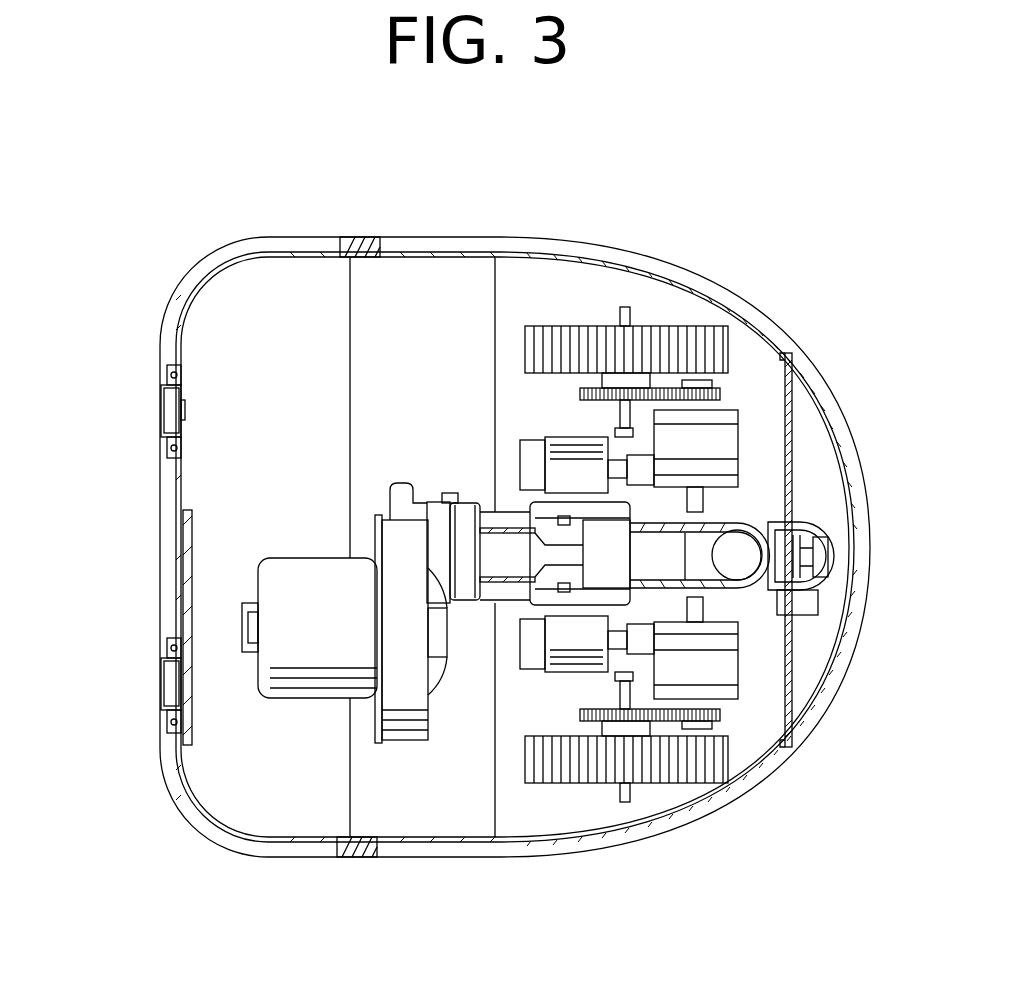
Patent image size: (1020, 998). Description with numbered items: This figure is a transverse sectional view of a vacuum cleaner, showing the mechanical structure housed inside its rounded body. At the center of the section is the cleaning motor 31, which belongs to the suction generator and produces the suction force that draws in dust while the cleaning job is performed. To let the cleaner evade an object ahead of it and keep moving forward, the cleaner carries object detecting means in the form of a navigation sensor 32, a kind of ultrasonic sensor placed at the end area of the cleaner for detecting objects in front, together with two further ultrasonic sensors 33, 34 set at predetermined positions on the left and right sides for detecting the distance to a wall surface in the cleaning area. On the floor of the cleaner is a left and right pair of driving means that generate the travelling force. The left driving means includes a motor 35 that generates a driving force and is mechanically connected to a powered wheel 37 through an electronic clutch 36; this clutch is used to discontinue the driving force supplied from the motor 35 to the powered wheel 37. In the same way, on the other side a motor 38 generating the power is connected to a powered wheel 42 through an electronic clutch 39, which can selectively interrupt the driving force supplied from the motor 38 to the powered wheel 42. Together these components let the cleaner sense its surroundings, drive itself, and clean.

The cleaning motor 31 is at (290, 578).
The navigation sensor 32 is at (838, 562).
The ultrasonic sensor 33 is at (363, 237).
The ultrasonic sensor 34 is at (363, 857).
The motor 35 is at (562, 455).
The electronic clutch 36 is at (730, 440).
The powered wheel 37 is at (612, 345).
The motor 38 is at (555, 640).
The electronic clutch 39 is at (725, 675).
The powered wheel 42 is at (680, 785).